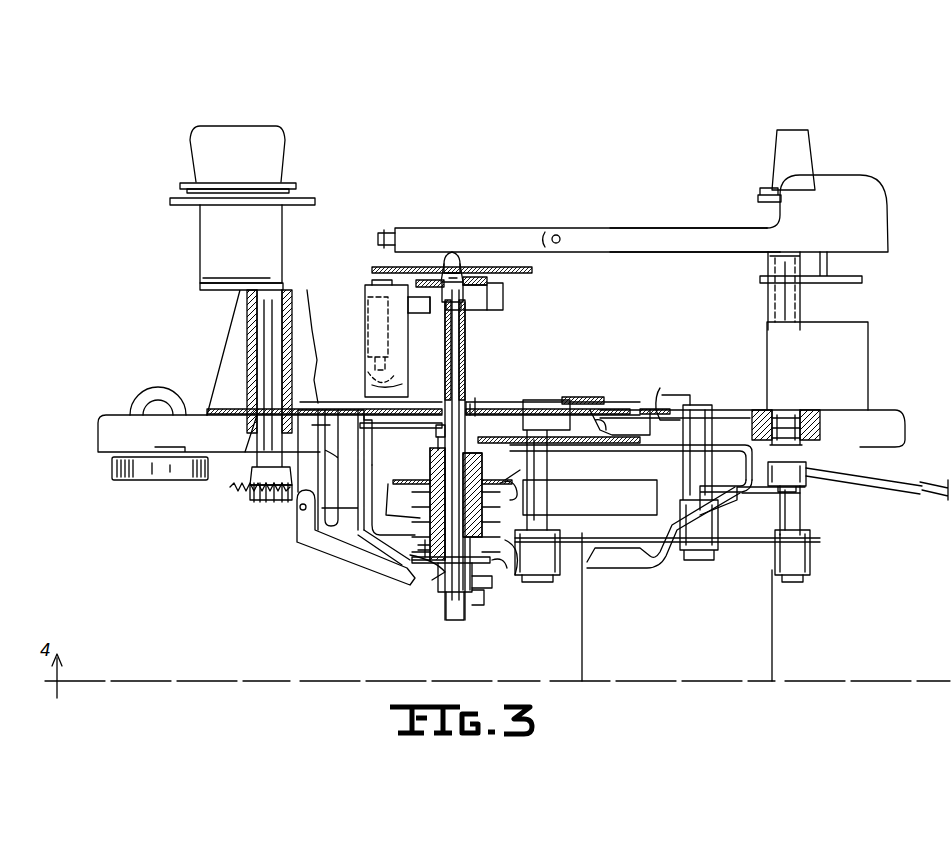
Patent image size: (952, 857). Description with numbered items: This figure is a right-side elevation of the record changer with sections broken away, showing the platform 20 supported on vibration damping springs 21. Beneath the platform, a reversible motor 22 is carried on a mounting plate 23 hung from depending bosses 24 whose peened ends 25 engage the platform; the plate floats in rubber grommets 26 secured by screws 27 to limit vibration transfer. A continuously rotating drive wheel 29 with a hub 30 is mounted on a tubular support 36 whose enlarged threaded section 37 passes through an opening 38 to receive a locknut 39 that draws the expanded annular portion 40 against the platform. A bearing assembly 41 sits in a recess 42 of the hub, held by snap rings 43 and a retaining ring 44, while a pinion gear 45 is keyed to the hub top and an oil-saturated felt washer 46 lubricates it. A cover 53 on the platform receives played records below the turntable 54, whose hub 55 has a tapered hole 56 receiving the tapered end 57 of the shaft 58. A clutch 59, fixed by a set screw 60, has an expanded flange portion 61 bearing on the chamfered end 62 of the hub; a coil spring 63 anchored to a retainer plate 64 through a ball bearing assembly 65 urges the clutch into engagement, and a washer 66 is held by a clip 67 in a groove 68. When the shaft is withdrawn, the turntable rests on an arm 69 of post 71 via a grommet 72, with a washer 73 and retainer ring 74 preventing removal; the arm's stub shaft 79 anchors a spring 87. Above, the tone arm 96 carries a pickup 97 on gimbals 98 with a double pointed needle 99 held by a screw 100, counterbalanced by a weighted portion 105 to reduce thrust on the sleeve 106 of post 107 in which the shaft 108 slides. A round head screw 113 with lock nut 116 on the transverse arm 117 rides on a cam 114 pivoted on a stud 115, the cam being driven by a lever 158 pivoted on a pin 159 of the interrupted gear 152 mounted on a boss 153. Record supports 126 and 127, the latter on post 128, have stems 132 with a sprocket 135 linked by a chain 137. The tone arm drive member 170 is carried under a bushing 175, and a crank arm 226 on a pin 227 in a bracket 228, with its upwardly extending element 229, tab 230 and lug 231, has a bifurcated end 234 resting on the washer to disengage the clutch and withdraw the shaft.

The platform 20 is at (108, 439).
The vibration damping mountings or springs 21 is at (168, 458).
The reversible motor 22 is at (772, 645).
The mounting plate 23 is at (805, 545).
The depending bosses 24 is at (802, 520).
The peened end 25 is at (692, 400).
The rubber grommets 26 is at (808, 566).
The screws 27 is at (795, 584).
The drive wheel 29 is at (612, 512).
The hub 30 is at (428, 498).
The tubular support 36 is at (446, 357).
The enlarged threaded section 37 is at (470, 402).
The opening 38 is at (478, 398).
The locknut 39 is at (428, 404).
The expanded annular portion 40 is at (470, 432).
The bearing assembly 41 is at (486, 530).
The recess 42 is at (428, 540).
The snap rings 43 is at (428, 520).
The retaining ring 44 is at (428, 580).
The pinion gear 45 is at (438, 444).
The felt washer 46 is at (434, 428).
The cover 53 is at (590, 404).
The turntable 54 is at (540, 271).
The hub 55 is at (466, 270).
The tapered hole 56 is at (447, 258).
The tapered end 57 is at (454, 260).
The shaft 58 is at (462, 310).
The clutch 59 is at (408, 572).
The set screw 60 is at (474, 605).
The expanded flange portion 61 is at (498, 572).
The chamfered end 62 is at (518, 576).
The coil spring 63 is at (516, 494).
The retainer plate 64 is at (435, 568).
The ball bearing assembly 65 is at (438, 582).
The washer 66 is at (482, 590).
The clip 67 is at (448, 596).
The groove 68 is at (458, 620).
The arm 69 is at (500, 310).
The post 71 is at (360, 300).
The grommet 72 is at (415, 284).
The washer 73 is at (490, 286).
The retainer ring 74 is at (475, 296).
The stub shaft 79 is at (372, 350).
The spring 87 is at (370, 384).
The tone arm 96 is at (660, 234).
The pickup 97 is at (533, 232).
The gimbals 98 is at (562, 236).
The double pointed needle 99 is at (425, 228).
The screw 100 is at (385, 232).
The enlarged weighted portion 105 is at (878, 216).
The sleeve 106 is at (790, 405).
The post 107 is at (858, 340).
The shaft 108 is at (790, 298).
The round head screw 113 is at (760, 495).
The cam 114 is at (640, 572).
The stud 115 is at (658, 400).
The lock nut 116 is at (795, 486).
The transversely extending arm 117 is at (812, 470).
The record support 126 is at (800, 160).
The record support 127 is at (212, 242).
The post 128 is at (235, 330).
The stem 132 is at (264, 378).
The sprocket 135 is at (228, 490).
The chain 137 is at (242, 495).
The interrupted gear 152 is at (618, 442).
The boss 153 is at (580, 398).
The lever 158 is at (668, 458).
The pin 159 is at (752, 486).
The tone arm drive member 170 is at (825, 442).
The bushing 175 is at (770, 416).
The crank arm 226 is at (318, 548).
The pin 227 is at (300, 512).
The bracket 228 is at (376, 390).
The upwardly extending element 229 is at (374, 473).
The tab 230 is at (372, 448).
The lug 231 is at (345, 440).
The bifurcated end 234 is at (436, 598).